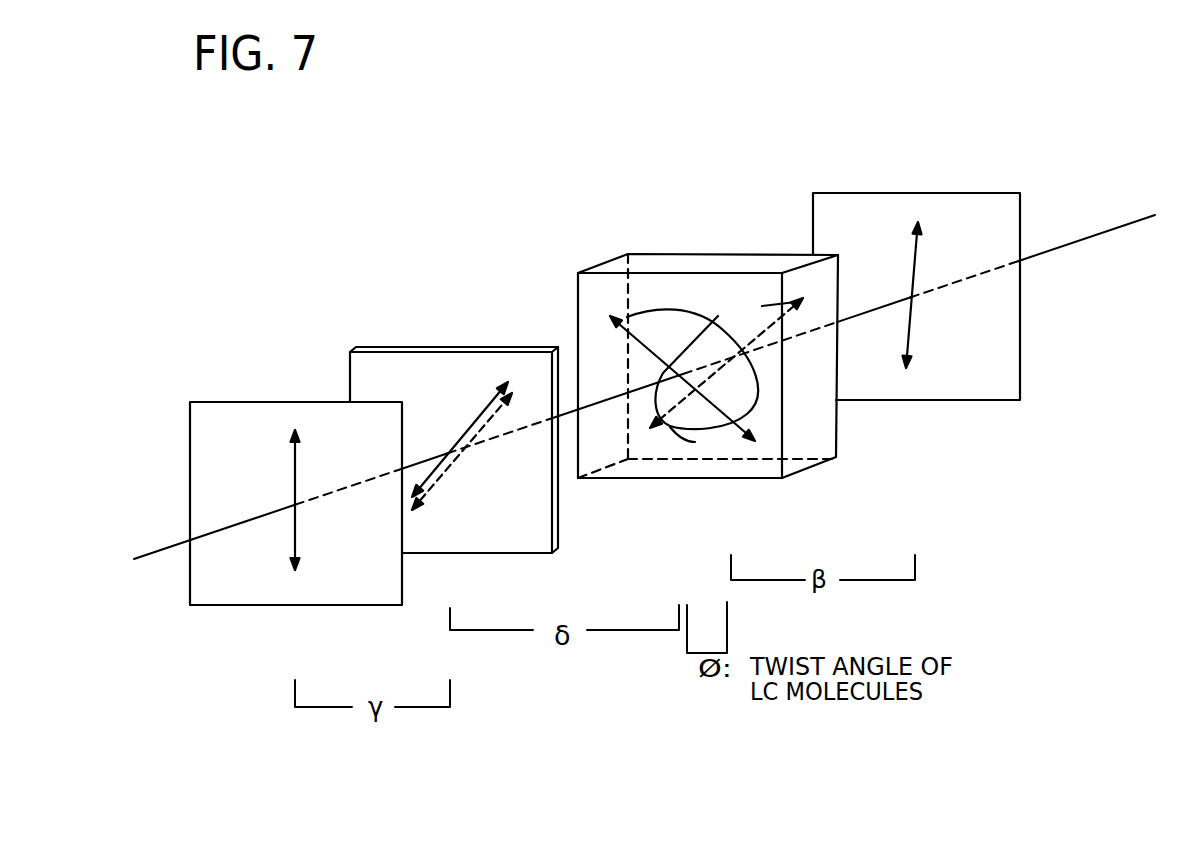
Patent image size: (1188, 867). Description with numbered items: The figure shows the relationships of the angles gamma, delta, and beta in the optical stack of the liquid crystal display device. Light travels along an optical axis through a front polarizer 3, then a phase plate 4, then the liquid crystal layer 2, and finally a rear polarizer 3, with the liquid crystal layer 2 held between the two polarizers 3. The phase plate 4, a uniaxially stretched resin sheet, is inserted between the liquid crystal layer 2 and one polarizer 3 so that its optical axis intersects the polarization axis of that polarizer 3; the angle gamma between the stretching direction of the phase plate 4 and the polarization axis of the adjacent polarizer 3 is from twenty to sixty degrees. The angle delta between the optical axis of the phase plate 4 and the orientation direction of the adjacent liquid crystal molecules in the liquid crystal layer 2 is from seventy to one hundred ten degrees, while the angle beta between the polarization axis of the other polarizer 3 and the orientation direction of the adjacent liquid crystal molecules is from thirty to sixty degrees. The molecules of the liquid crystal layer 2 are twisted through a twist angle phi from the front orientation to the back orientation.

The liquid crystal layer 2 is at (708, 352).
The polarizer 3 is at (605, 385).
The phase plate 4 is at (454, 434).